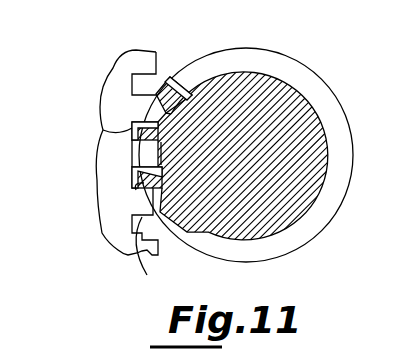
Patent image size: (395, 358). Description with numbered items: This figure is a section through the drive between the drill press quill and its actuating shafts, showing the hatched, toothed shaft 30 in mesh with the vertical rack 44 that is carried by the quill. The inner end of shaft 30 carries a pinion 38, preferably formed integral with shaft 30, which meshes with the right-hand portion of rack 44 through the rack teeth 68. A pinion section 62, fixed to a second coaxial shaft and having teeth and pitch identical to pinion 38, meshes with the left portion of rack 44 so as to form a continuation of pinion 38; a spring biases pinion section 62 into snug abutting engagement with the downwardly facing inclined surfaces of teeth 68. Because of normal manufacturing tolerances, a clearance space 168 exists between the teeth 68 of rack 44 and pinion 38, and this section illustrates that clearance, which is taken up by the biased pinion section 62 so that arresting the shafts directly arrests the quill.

The shaft 30 is at (228, 72).
The pinion section 62 is at (175, 76).
The rack 44 is at (114, 173).
The clearance space 168 is at (103, 130).
The pinion 38 is at (129, 197).
The teeth 68 is at (150, 253).